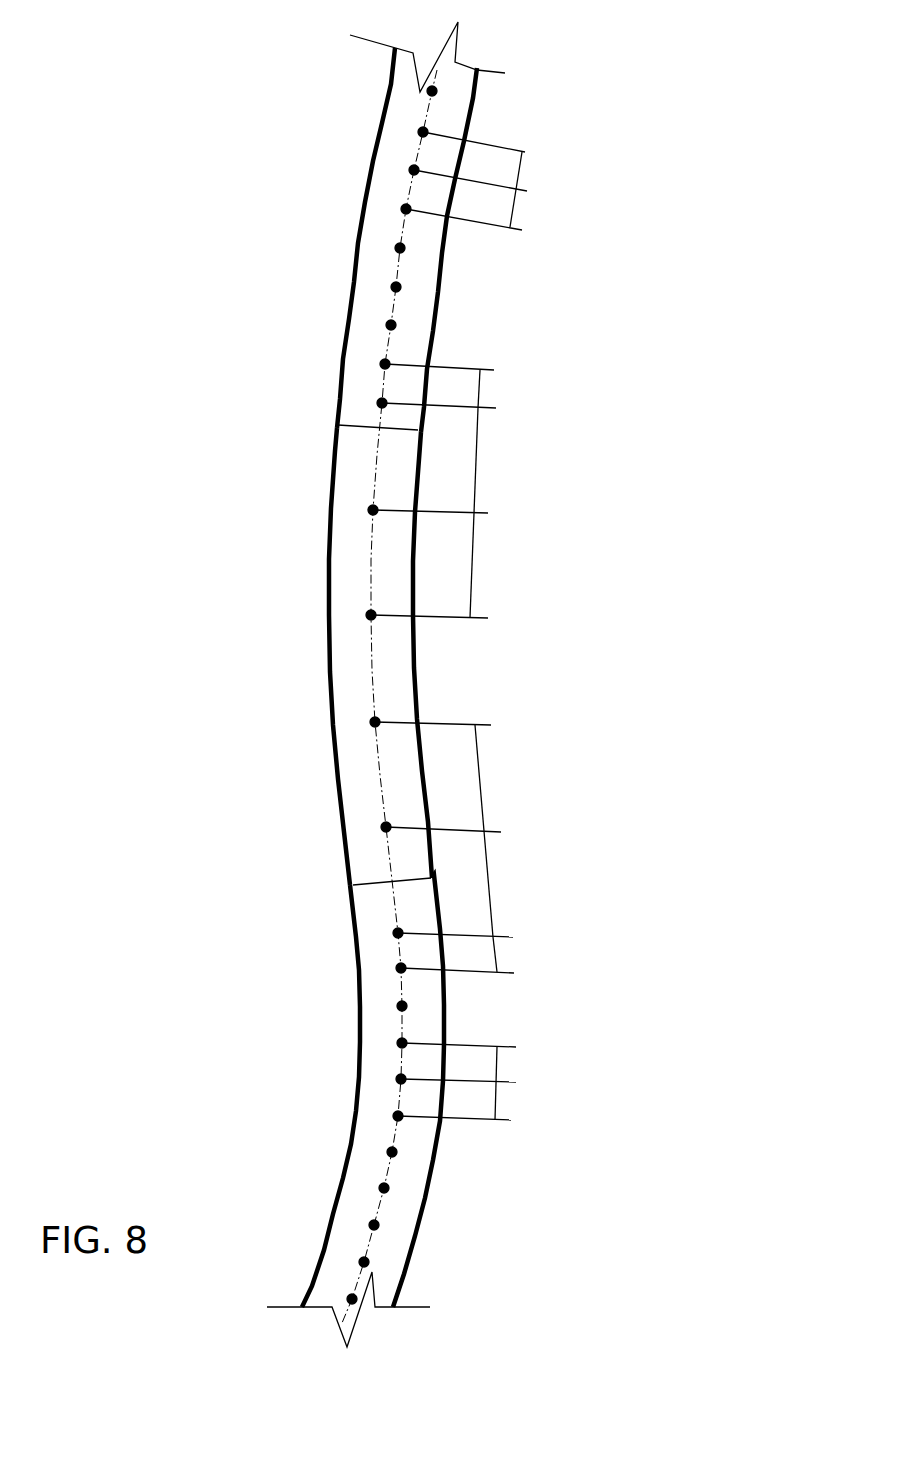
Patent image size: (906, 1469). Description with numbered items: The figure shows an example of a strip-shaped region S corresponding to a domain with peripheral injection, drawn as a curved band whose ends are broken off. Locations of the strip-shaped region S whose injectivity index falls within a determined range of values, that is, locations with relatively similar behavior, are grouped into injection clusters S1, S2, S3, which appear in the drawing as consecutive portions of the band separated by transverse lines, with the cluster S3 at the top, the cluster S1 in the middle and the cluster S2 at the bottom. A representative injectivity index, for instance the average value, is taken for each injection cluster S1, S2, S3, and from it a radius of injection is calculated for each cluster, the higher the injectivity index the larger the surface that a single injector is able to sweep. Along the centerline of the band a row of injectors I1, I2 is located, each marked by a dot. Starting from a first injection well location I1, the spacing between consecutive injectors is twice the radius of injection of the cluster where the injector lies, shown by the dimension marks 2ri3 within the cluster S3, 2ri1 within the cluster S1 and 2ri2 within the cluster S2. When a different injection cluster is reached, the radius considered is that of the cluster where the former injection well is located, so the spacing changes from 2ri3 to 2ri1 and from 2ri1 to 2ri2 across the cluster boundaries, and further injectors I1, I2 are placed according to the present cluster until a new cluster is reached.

The strip-shaped region S is at (422, 330).
The injection cluster S1 is at (342, 567).
The injection cluster S2 is at (362, 902).
The injection cluster S3 is at (362, 258).
The injector I1 is at (396, 460).
The injector I2 is at (362, 1116).
The spacing of twice the radius of injection 2ri1 is at (463, 672).
The spacing of twice the radius of injection 2ri2 is at (481, 1028).
The spacing of twice the radius of injection 2ri3 is at (478, 270).